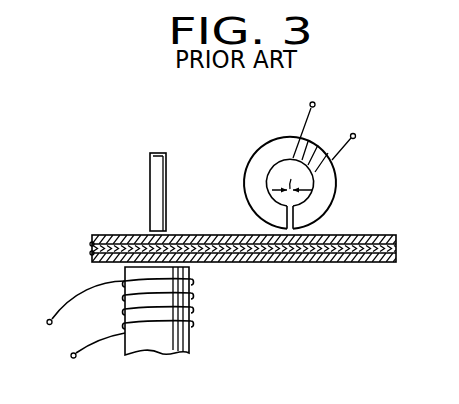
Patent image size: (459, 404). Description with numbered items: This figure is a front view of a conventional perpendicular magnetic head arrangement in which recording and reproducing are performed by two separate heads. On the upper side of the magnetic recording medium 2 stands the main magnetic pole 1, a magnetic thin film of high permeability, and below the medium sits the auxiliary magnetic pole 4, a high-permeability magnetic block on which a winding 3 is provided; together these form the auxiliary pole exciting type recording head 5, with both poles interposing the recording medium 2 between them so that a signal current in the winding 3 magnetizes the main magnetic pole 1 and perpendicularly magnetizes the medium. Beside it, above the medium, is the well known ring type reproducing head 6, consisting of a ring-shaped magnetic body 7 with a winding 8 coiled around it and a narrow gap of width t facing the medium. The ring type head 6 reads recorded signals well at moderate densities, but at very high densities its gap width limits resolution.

The main magnetic pole 1 is at (158, 161).
The magnetic recording medium 2 is at (370, 222).
The winding 3 is at (79, 291).
The auxiliary magnetic pole 4 is at (189, 339).
The auxiliary pole exciting type recording head 5 is at (128, 205).
The ring type reproducing head 6 is at (316, 165).
The ring-shaped magnetic body 7 is at (248, 189).
The winding 8 is at (306, 119).